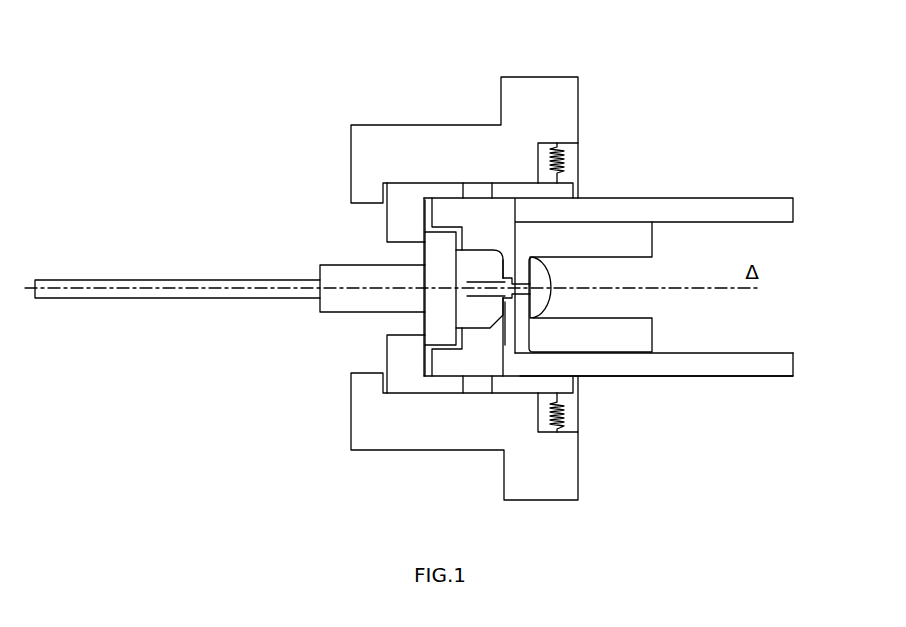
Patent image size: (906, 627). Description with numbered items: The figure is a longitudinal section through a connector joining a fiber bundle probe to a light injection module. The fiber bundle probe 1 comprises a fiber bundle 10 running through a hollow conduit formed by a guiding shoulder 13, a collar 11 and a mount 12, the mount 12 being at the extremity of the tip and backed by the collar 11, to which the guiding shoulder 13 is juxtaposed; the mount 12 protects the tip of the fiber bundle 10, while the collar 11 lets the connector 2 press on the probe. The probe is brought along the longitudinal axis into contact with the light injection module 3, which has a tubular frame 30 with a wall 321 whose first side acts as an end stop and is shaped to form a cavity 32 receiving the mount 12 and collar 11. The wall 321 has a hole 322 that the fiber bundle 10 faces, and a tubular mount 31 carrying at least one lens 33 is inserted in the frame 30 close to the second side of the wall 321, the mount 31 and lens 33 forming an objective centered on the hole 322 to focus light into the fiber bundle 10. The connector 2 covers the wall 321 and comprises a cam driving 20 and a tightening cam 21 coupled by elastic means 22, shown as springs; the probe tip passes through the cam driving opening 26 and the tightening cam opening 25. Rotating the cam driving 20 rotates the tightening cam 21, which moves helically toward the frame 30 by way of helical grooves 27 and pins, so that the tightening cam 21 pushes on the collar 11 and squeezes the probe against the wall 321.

The fiber bundle probe 1 is at (78, 265).
The fiber bundle 10 is at (163, 278).
The collar 11 is at (437, 278).
The mount 12 is at (470, 310).
The guiding shoulder 13 is at (330, 267).
The connector 2 is at (453, 254).
The cam driving 20 is at (410, 138).
The tightening cam 21 is at (403, 370).
The elastic means 22 is at (560, 157).
The tightening cam opening 25 is at (412, 250).
The cam driving opening 26 is at (367, 348).
The helical grooves 27 is at (477, 192).
The light injection module 3 is at (581, 314).
The frame 30 is at (625, 365).
The mount 31 is at (643, 240).
The cavity 32 is at (502, 322).
The wall 321 is at (510, 317).
The hole 322 is at (507, 280).
The lens 33 is at (543, 293).